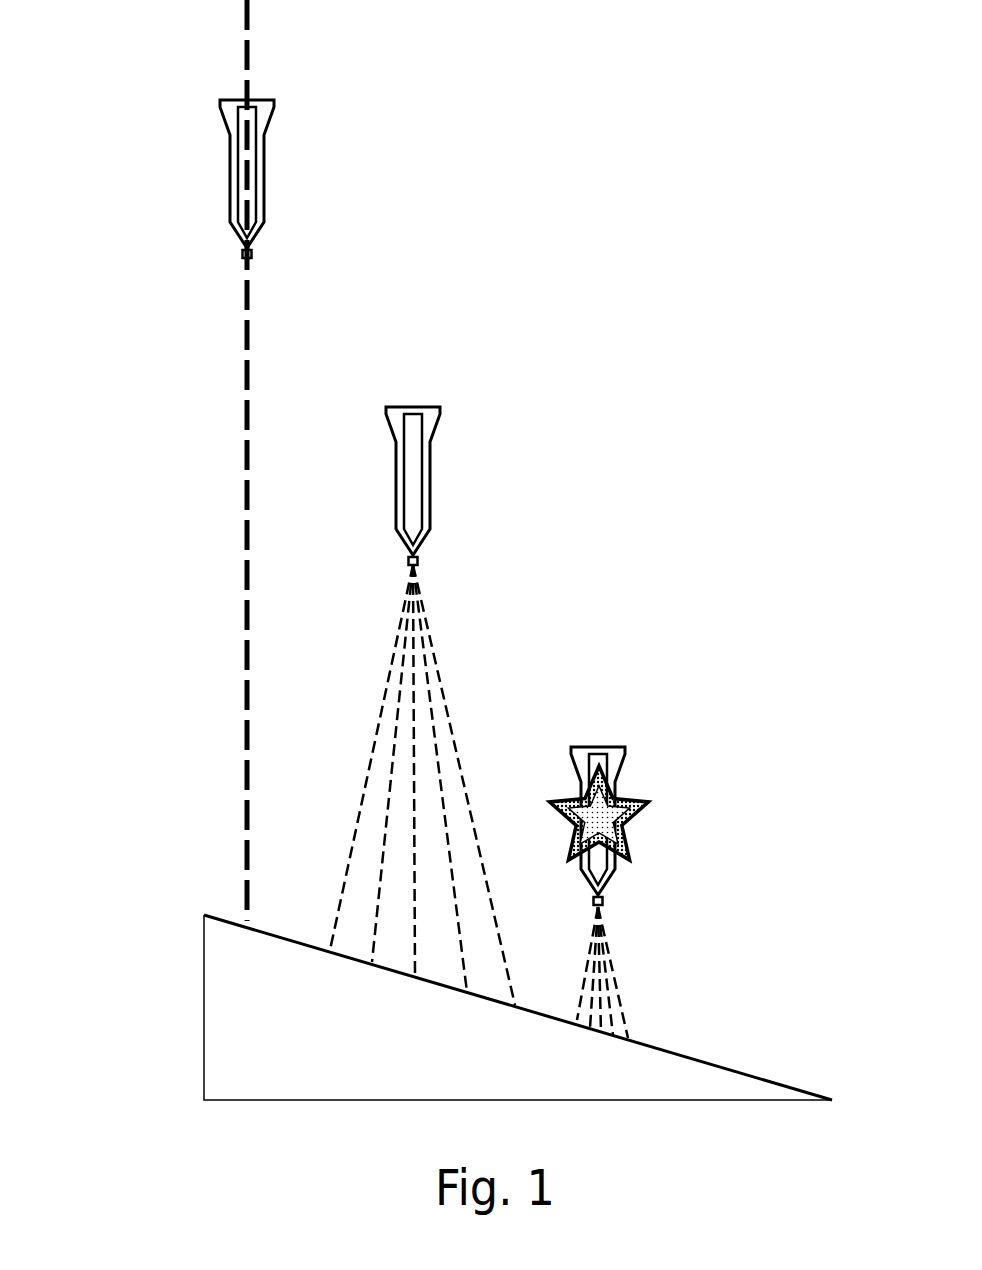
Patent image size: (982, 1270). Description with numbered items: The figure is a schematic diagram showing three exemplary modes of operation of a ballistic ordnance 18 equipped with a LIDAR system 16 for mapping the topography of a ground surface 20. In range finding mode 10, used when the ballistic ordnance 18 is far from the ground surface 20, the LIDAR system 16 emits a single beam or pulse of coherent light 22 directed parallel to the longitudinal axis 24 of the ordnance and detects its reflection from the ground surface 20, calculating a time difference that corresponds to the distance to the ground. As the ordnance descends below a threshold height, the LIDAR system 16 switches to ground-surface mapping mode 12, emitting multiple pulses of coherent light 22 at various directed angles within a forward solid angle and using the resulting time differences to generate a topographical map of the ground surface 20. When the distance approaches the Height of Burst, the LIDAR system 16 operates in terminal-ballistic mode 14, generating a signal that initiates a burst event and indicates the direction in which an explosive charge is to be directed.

The range finding mode 10 is at (138, 334).
The ground-surface mapping mode 12 is at (360, 624).
The terminal-ballistic mode 14 is at (553, 754).
The LIDAR system 16 is at (264, 263).
The ballistic ordnance 18 is at (230, 160).
The ground surface 20 is at (742, 1070).
The pulse of coherent light 22 is at (245, 695).
The longitudinal axis 24 is at (245, 18).